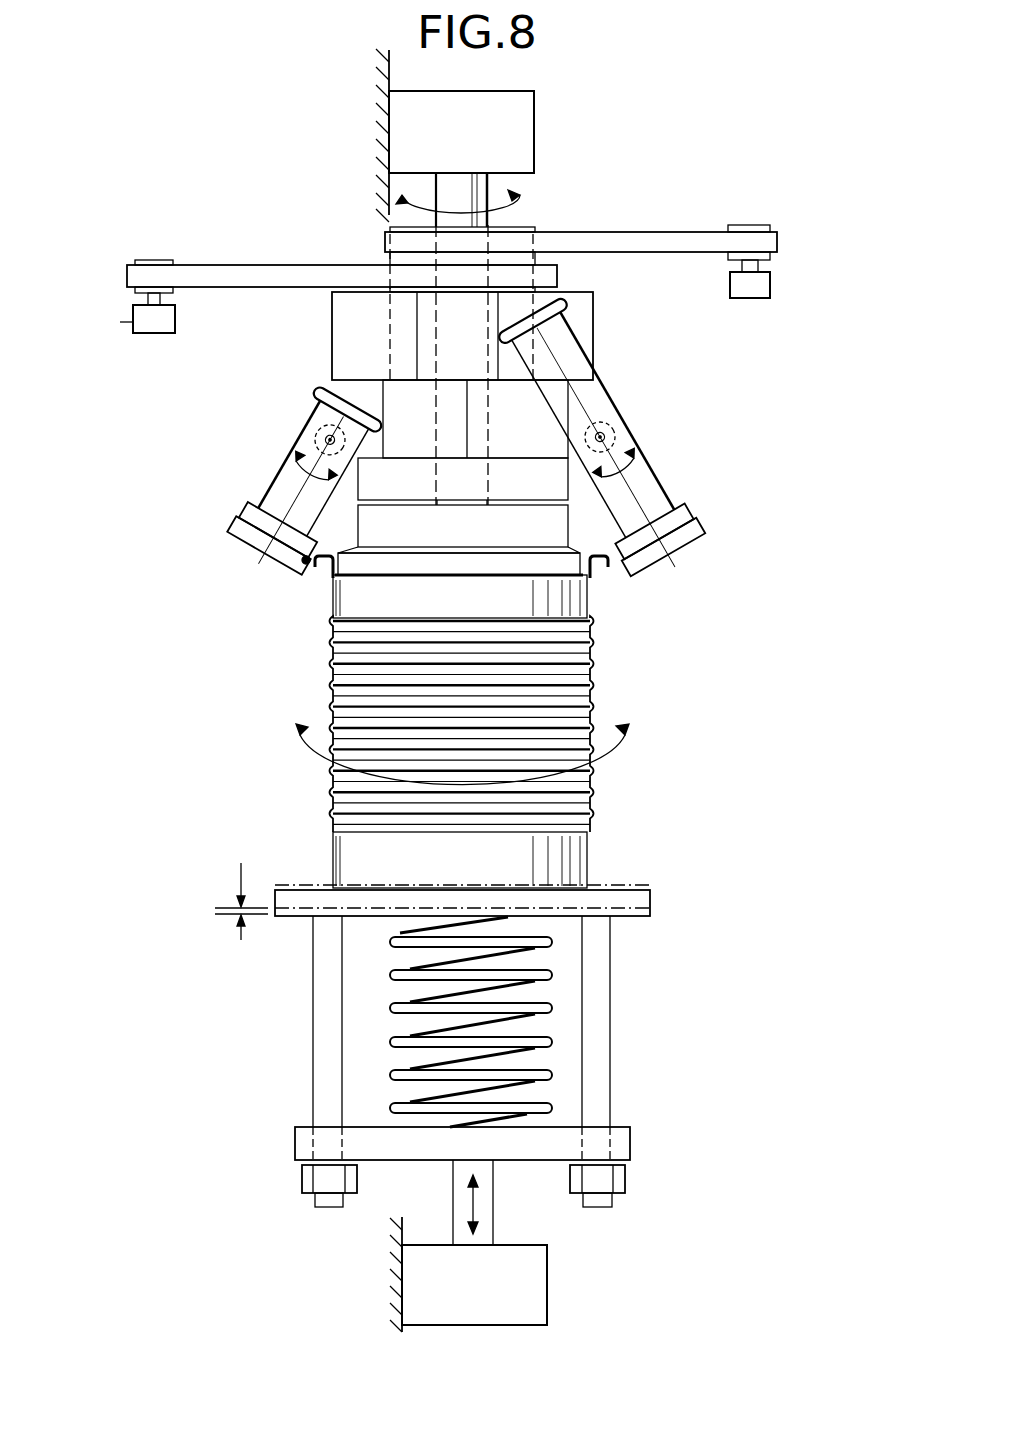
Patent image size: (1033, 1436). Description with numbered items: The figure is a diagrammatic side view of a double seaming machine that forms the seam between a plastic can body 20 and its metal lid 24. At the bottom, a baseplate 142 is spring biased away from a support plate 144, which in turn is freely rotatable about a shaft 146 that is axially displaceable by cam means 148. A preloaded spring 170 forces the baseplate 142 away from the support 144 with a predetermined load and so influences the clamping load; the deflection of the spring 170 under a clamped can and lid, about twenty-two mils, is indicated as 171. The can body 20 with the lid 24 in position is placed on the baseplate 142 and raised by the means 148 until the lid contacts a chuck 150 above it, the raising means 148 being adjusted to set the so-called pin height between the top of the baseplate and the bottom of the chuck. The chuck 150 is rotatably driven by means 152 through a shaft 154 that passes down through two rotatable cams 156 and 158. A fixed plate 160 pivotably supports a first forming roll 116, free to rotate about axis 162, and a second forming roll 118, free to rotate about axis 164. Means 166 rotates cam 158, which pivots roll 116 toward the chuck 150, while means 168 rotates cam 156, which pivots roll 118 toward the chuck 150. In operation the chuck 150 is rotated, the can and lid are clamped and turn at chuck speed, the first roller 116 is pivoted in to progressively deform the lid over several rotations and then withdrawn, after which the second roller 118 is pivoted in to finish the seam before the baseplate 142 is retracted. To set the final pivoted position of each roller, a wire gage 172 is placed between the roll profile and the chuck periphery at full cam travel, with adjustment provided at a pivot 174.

The can body 20 is at (330, 855).
The lid 24 is at (606, 560).
The first forming roll 116 is at (237, 503).
The second forming roll 118 is at (690, 522).
The baseplate 142 is at (652, 888).
The support plate 144 is at (630, 1143).
The shaft 146 is at (453, 1198).
The cam means 148 is at (548, 1302).
The chuck 150 is at (665, 547).
The means 152 is at (535, 125).
The shaft 154 is at (487, 218).
The cam 156 is at (593, 322).
The cam 158 is at (468, 420).
The fixed plate 160 is at (568, 520).
The axis 162 is at (300, 488).
The axis 164 is at (638, 502).
The cam rotating means 166 is at (770, 287).
The cam rotating means 168 is at (133, 322).
The spring 170 is at (550, 1006).
The spring deflection 171 is at (241, 940).
The wire gage 172 is at (307, 565).
The pivot 174 is at (326, 438).